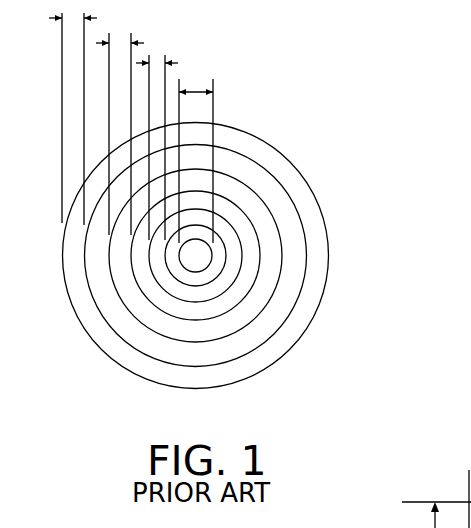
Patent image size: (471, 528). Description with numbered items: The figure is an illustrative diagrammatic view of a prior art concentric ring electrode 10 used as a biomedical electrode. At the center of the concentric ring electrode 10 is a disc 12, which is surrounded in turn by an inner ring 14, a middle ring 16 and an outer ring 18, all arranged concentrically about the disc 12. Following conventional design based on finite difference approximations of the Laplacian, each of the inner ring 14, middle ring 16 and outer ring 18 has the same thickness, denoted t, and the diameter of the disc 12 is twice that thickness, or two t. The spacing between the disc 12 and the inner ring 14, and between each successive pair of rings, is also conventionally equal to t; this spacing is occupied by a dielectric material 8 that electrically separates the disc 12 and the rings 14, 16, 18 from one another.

The concentric ring electrode 10 is at (320, 66).
The dielectric material 8 is at (192, 277).
The disc 12 is at (197, 256).
The inner ring 14 is at (223, 283).
The middle ring 16 is at (273, 275).
The outer ring 18 is at (322, 257).